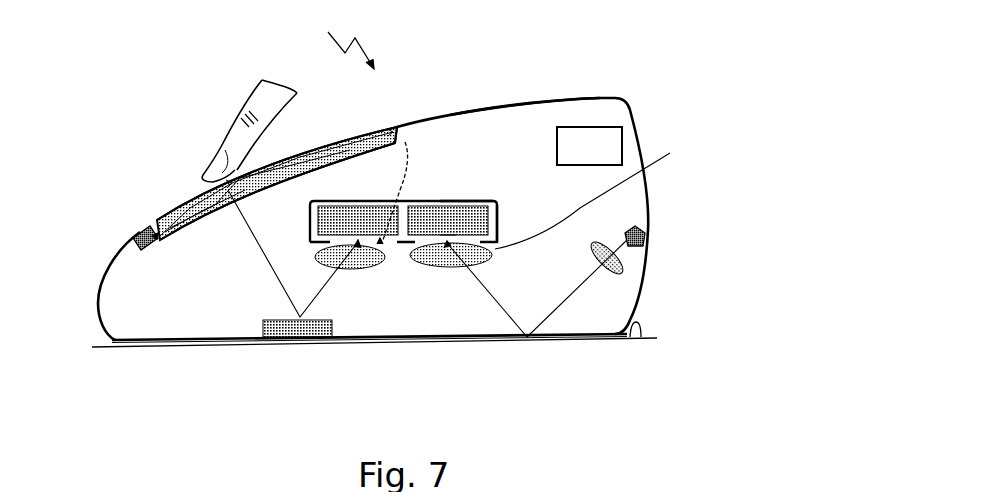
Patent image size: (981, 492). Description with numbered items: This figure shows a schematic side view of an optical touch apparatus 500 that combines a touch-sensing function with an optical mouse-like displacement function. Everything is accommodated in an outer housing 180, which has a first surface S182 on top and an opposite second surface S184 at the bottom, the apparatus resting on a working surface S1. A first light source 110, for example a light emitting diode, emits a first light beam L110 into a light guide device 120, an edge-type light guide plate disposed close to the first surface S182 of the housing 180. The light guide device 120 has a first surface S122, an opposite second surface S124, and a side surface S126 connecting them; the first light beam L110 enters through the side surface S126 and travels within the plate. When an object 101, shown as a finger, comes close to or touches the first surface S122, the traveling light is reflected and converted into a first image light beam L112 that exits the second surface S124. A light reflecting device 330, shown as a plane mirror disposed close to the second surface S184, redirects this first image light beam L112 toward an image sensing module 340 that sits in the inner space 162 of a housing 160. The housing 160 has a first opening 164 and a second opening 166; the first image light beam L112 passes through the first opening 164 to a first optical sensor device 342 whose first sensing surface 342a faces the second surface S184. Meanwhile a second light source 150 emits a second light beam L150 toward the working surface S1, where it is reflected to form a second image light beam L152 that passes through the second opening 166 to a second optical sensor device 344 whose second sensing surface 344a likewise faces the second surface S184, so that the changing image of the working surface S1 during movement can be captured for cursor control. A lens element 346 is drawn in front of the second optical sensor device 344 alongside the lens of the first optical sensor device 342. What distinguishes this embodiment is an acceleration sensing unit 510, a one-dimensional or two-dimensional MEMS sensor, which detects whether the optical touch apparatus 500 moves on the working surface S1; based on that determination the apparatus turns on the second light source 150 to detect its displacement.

The optical touch apparatus 500 is at (342, 43).
The object 101 is at (243, 142).
The first light source 110 is at (135, 235).
The first light beam L110 is at (157, 228).
The light guide device 120 is at (330, 137).
The first surface S122 is at (180, 217).
The second surface S124 is at (203, 222).
The side surface S126 is at (160, 238).
The first image light beam L112 is at (275, 250).
The light reflecting device 330 is at (296, 337).
The image sensing module 340 is at (403, 221).
The first optical sensor device 342 is at (398, 246).
The first sensing surface 342a is at (380, 242).
The second optical sensor device 344 is at (432, 204).
The second sensing surface 344a is at (601, 198).
The second lens 346 is at (451, 255).
The housing 160 is at (467, 200).
The inner space 162 is at (497, 218).
The first opening 164 is at (400, 138).
The second opening 166 is at (448, 236).
The second light source 150 is at (647, 238).
The second light beam L150 is at (570, 307).
The second image light beam L152 is at (497, 307).
The housing 180 is at (573, 96).
The first surface S182 is at (543, 97).
The second surface S184 is at (167, 339).
The working surface S1 is at (640, 345).
The acceleration sensing unit 510 is at (622, 140).